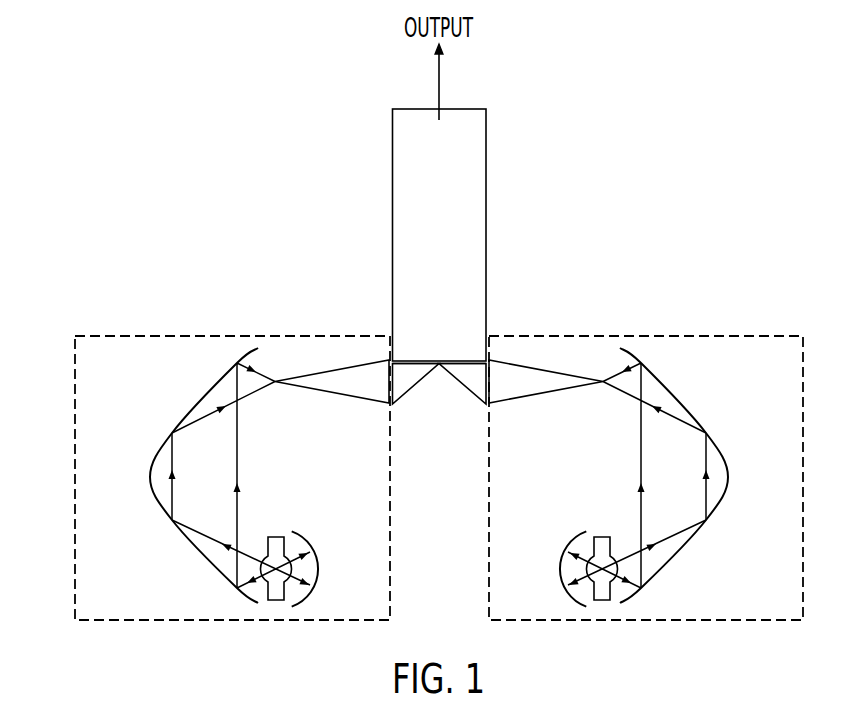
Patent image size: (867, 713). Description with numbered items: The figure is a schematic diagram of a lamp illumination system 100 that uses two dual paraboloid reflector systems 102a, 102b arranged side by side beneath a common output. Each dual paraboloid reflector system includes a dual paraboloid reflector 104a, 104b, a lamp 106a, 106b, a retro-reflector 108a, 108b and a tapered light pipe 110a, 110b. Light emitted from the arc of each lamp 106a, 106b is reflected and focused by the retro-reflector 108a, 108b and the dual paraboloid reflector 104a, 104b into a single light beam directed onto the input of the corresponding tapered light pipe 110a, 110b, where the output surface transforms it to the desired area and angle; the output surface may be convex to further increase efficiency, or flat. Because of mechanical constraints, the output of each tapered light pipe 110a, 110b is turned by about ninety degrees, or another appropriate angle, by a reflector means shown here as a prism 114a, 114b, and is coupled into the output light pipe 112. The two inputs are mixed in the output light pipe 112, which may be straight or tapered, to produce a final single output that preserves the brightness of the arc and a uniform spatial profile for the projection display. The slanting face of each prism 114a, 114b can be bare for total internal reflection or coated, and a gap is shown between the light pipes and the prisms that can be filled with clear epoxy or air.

The lamp illumination system 100 is at (257, 153).
The first dual paraboloid reflector system 102a is at (72, 425).
The second dual paraboloid reflector system 102b is at (803, 422).
The first dual paraboloid reflector 104a is at (150, 477).
The second dual paraboloid reflector 104b is at (728, 472).
The first lamp 106a is at (277, 537).
The second lamp 106b is at (603, 535).
The first retro-reflector 108a is at (318, 569).
The second retro-reflector 108b is at (561, 568).
The first tapered light pipe 110a is at (335, 361).
The second tapered light pipe 110b is at (551, 370).
The output light pipe 112 is at (486, 160).
The first prism 114a is at (403, 405).
The second prism 114b is at (477, 406).